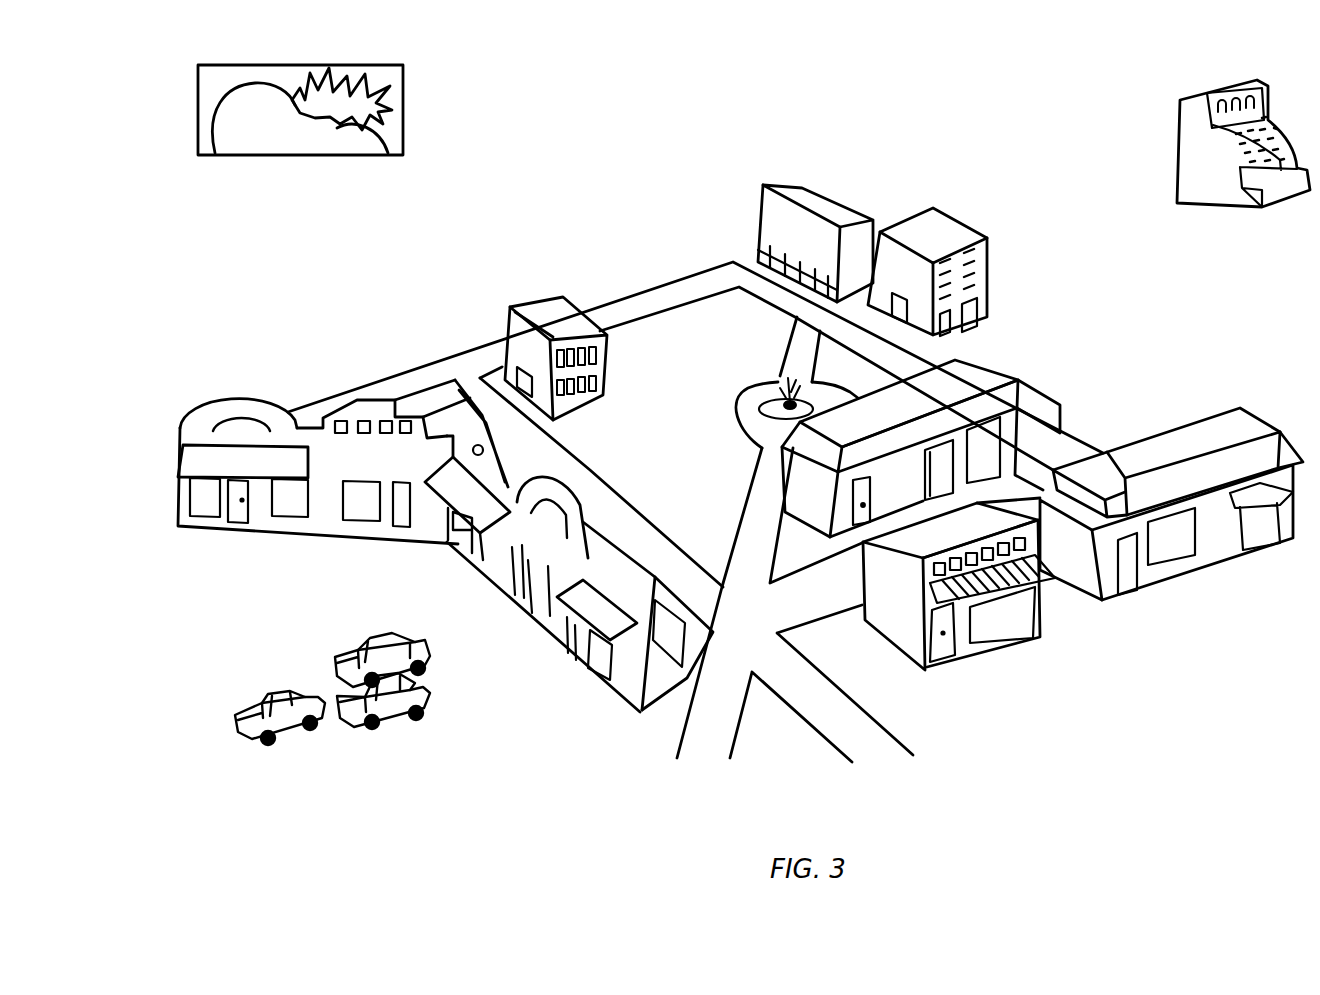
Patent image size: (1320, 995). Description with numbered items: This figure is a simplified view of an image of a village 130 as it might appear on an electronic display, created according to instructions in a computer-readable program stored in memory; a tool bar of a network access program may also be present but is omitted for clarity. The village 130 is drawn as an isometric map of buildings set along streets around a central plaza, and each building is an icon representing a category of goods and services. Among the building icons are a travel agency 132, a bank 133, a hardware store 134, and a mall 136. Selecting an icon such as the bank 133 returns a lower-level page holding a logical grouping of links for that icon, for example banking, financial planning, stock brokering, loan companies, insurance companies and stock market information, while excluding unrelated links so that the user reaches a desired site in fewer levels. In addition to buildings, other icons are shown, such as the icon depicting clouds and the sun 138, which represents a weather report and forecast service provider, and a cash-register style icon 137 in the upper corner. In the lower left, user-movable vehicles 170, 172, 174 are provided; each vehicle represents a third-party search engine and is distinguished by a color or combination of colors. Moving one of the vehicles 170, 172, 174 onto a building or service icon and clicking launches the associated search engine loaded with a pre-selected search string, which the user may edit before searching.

The village 130 is at (792, 96).
The travel agency 132 is at (763, 204).
The bank 133 is at (548, 305).
The hardware store 134 is at (1241, 411).
The mall 136 is at (268, 398).
The cash register icon 137 is at (1180, 110).
The icon depicting clouds and the sun 138 is at (403, 97).
The user-movable vehicle 170 is at (373, 634).
The user-movable vehicle 172 is at (275, 696).
The user-movable vehicle 174 is at (428, 694).